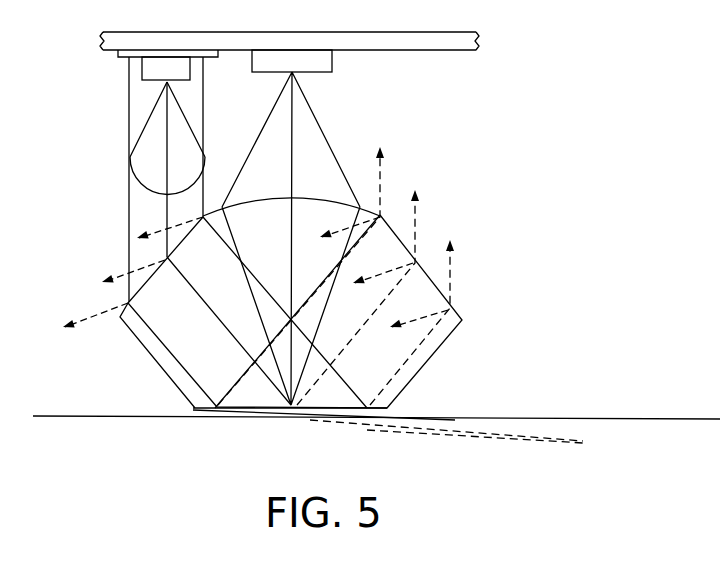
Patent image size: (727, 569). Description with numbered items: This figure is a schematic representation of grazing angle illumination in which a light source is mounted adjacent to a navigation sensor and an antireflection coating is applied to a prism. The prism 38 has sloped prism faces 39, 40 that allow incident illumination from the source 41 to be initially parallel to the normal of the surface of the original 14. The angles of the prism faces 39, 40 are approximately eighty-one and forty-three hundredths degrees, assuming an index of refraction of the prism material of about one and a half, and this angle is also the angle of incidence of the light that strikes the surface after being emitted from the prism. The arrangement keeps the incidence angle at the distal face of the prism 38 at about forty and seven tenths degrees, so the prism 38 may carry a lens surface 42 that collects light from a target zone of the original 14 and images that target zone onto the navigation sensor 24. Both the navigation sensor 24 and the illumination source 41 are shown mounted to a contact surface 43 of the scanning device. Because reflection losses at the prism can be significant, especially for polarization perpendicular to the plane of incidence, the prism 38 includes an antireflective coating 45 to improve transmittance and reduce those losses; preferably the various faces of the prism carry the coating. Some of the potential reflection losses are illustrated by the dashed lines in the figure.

The original 14 is at (572, 418).
The navigation sensor 24 is at (333, 60).
The prism 38 is at (152, 378).
The prism face 39 is at (128, 300).
The prism face 40 is at (462, 320).
The illumination source 41 is at (129, 125).
The lens surface 42 is at (325, 197).
The contact surface 43 is at (462, 50).
The antireflective coating 45 is at (198, 413).